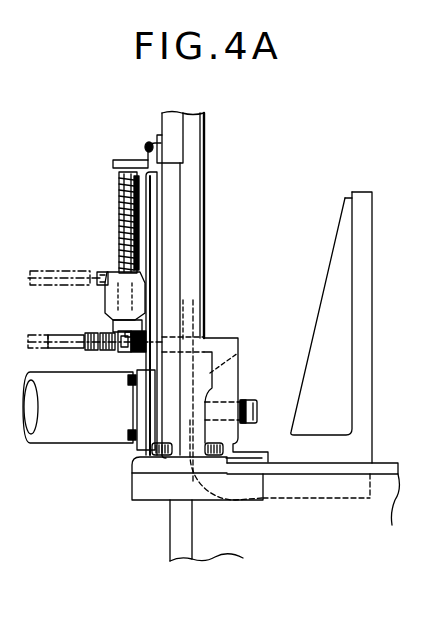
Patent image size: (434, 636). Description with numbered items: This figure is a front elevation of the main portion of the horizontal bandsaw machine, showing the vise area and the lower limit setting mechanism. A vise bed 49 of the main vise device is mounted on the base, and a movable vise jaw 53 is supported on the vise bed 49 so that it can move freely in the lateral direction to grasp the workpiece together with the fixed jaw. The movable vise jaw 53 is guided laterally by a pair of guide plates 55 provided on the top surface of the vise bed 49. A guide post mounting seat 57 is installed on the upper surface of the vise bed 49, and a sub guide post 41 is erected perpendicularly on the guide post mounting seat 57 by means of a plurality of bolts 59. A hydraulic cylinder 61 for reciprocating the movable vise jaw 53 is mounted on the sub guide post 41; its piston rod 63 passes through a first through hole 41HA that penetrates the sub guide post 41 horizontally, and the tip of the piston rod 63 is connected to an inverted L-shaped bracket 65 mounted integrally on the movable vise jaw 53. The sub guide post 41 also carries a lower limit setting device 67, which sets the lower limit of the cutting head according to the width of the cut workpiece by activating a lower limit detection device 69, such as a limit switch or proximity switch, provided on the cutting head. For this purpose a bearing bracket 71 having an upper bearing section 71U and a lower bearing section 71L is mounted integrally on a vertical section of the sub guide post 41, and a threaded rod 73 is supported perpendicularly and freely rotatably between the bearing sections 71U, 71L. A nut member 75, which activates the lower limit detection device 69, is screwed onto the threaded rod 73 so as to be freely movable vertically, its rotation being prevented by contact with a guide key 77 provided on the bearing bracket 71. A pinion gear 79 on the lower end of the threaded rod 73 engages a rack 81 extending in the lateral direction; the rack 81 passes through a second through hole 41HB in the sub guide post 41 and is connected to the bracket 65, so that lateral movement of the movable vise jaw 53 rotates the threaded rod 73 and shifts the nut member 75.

The sub guide post 41 is at (198, 248).
The first through hole 41HA is at (208, 385).
The second through hole 41HB is at (193, 326).
The vise bed 49 is at (206, 563).
The movable vise jaw 53 is at (320, 323).
The guide plates 55 is at (387, 466).
The guide post mounting seat 57 is at (141, 492).
The bolts 59 is at (238, 450).
The hydraulic cylinder 61 is at (88, 438).
The piston rod 63 is at (227, 373).
The inverted L-shaped bracket 65 is at (233, 395).
The lower limit setting device 67 is at (90, 209).
The lower limit detection device 69 is at (42, 269).
The bearing bracket 71 is at (152, 225).
The upper bearing section 71U is at (145, 158).
The lower bearing section 71L is at (113, 332).
The threaded rod 73 is at (127, 237).
The nut member 75 is at (112, 300).
The guide key 77 is at (124, 190).
The pinion gear 79 is at (122, 351).
The rack 81 is at (92, 349).